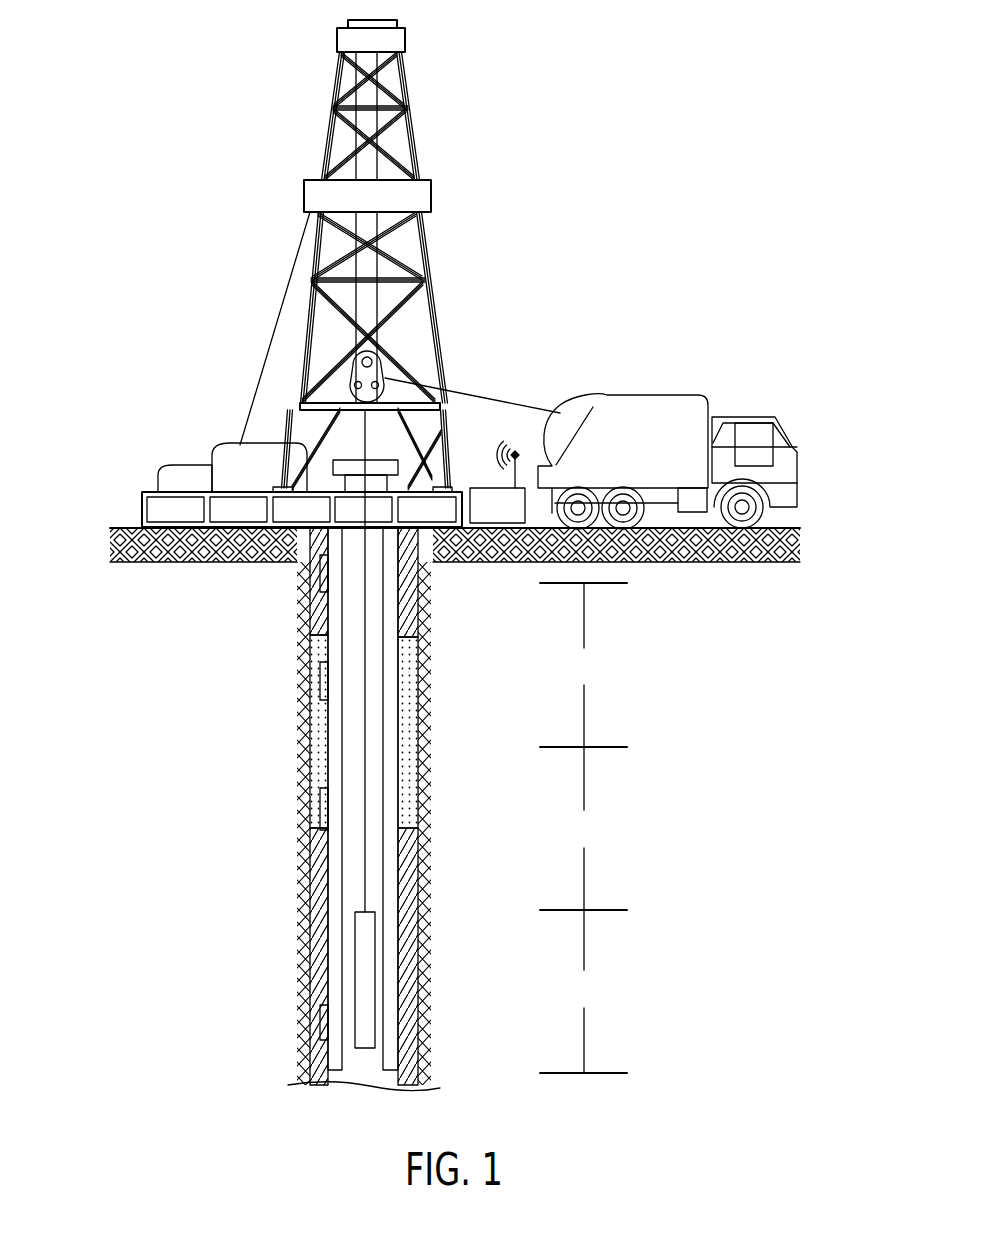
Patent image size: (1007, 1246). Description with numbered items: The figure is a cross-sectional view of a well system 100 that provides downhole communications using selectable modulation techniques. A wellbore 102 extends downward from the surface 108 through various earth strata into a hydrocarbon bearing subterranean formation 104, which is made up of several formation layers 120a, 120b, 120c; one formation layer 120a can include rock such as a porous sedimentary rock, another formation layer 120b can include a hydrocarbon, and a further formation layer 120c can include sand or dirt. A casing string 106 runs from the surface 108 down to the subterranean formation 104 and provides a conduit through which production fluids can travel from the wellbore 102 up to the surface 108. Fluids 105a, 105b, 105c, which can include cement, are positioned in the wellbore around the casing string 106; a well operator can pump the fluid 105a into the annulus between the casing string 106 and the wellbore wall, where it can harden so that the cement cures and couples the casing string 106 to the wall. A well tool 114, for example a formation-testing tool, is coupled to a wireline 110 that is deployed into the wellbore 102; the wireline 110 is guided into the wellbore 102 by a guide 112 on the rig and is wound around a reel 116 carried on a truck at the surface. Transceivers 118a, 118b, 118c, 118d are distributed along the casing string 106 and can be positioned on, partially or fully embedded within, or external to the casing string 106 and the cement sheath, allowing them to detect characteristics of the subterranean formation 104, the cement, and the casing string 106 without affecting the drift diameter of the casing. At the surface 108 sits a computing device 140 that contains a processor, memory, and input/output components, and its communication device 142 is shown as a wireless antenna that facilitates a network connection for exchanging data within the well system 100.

The well system 100 is at (646, 150).
The wellbore 102 is at (421, 882).
The subterranean formation 104 is at (446, 697).
The fluid 105a is at (408, 980).
The fluid 105b is at (410, 782).
The fluid 105c is at (410, 602).
The casing string 106 is at (335, 758).
The surface 108 is at (398, 462).
The wireline 110 is at (363, 893).
The guide 112 is at (377, 362).
The well tool 114 is at (375, 942).
The reel 116 is at (580, 410).
The transceiver 118a is at (321, 1020).
The transceiver 118b is at (321, 800).
The transceiver 118c is at (321, 685).
The transceiver 118d is at (320, 563).
The formation layer 120a is at (583, 991).
The formation layer 120b is at (583, 828).
The formation layer 120c is at (583, 665).
The computing device 140 is at (493, 523).
The communication device 142 is at (517, 452).